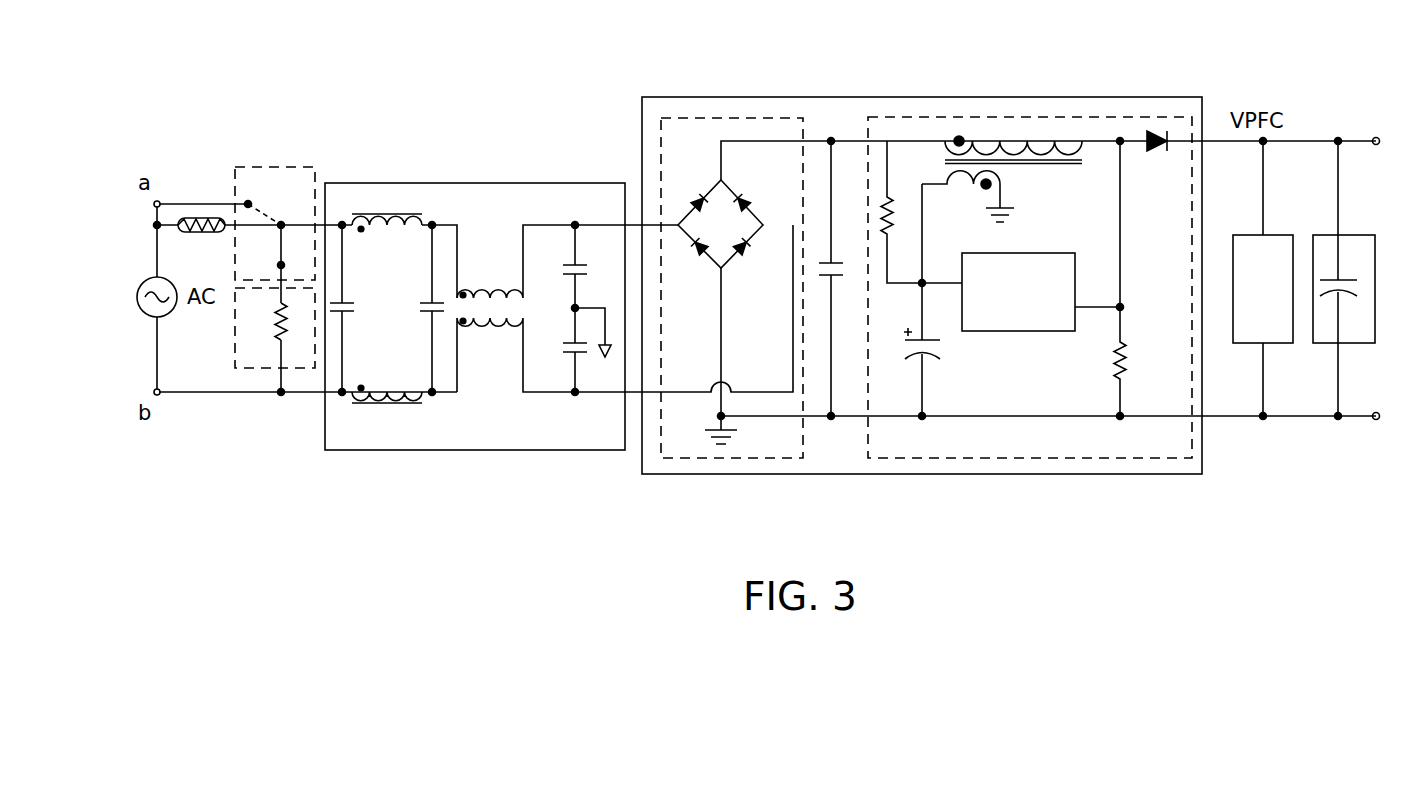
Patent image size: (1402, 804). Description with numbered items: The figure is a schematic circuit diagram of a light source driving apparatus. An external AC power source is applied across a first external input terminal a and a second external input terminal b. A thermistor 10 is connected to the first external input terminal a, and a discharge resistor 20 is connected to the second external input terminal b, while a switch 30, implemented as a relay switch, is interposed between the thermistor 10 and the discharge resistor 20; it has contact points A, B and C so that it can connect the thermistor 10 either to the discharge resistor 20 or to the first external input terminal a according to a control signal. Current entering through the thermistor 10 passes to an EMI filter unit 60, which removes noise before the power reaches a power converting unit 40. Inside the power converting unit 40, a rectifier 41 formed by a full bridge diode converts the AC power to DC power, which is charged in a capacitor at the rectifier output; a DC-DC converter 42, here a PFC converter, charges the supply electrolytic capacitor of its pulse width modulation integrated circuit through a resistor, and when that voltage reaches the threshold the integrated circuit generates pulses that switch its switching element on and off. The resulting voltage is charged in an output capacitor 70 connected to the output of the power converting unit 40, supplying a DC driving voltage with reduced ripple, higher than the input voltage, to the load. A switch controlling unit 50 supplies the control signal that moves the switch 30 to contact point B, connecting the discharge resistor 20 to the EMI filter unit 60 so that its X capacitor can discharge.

The thermistor 10 is at (201, 218).
The discharge resistor 20 is at (245, 368).
The switch 30 is at (280, 167).
The power converting unit 40 is at (1143, 97).
The rectifier 41 is at (748, 458).
The DC-DC converter 42 is at (1118, 458).
The switch controlling unit 50 is at (1268, 235).
The EMI filter unit 60 is at (566, 183).
The output capacitor 70 is at (1360, 235).